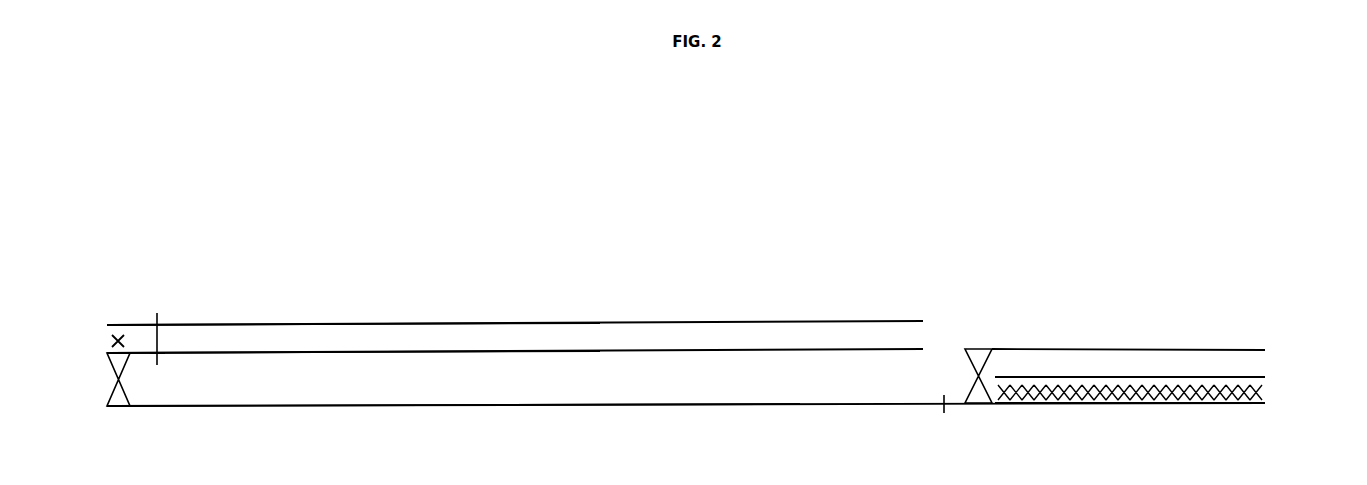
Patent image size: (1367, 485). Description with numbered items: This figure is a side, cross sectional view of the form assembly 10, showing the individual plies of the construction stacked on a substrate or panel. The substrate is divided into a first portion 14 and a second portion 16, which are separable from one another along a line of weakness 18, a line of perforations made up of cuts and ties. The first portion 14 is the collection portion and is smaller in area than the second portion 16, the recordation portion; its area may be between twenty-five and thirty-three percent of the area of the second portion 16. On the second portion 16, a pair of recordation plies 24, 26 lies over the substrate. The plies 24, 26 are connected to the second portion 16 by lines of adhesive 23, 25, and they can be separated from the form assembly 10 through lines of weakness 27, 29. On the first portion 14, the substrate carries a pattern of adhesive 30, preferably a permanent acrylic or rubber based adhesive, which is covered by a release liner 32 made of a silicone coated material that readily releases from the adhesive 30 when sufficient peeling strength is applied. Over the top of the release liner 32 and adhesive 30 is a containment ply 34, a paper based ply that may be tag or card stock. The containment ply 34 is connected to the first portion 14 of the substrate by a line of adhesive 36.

The form assembly 10 is at (1194, 280).
The first portion 14 is at (1118, 403).
The second portion 16 is at (355, 406).
The line of weakness 18 is at (944, 413).
The line of adhesive 23 is at (112, 340).
The recordation ply 24 is at (233, 323).
The line of adhesive 25 is at (112, 392).
The recordation ply 26 is at (278, 352).
The line of weakness 27 is at (157, 315).
The line of weakness 29 is at (157, 352).
The pattern of adhesive 30 is at (1268, 393).
The release liner 32 is at (1268, 375).
The containment ply 34 is at (1240, 348).
The line of adhesive 36 is at (970, 362).